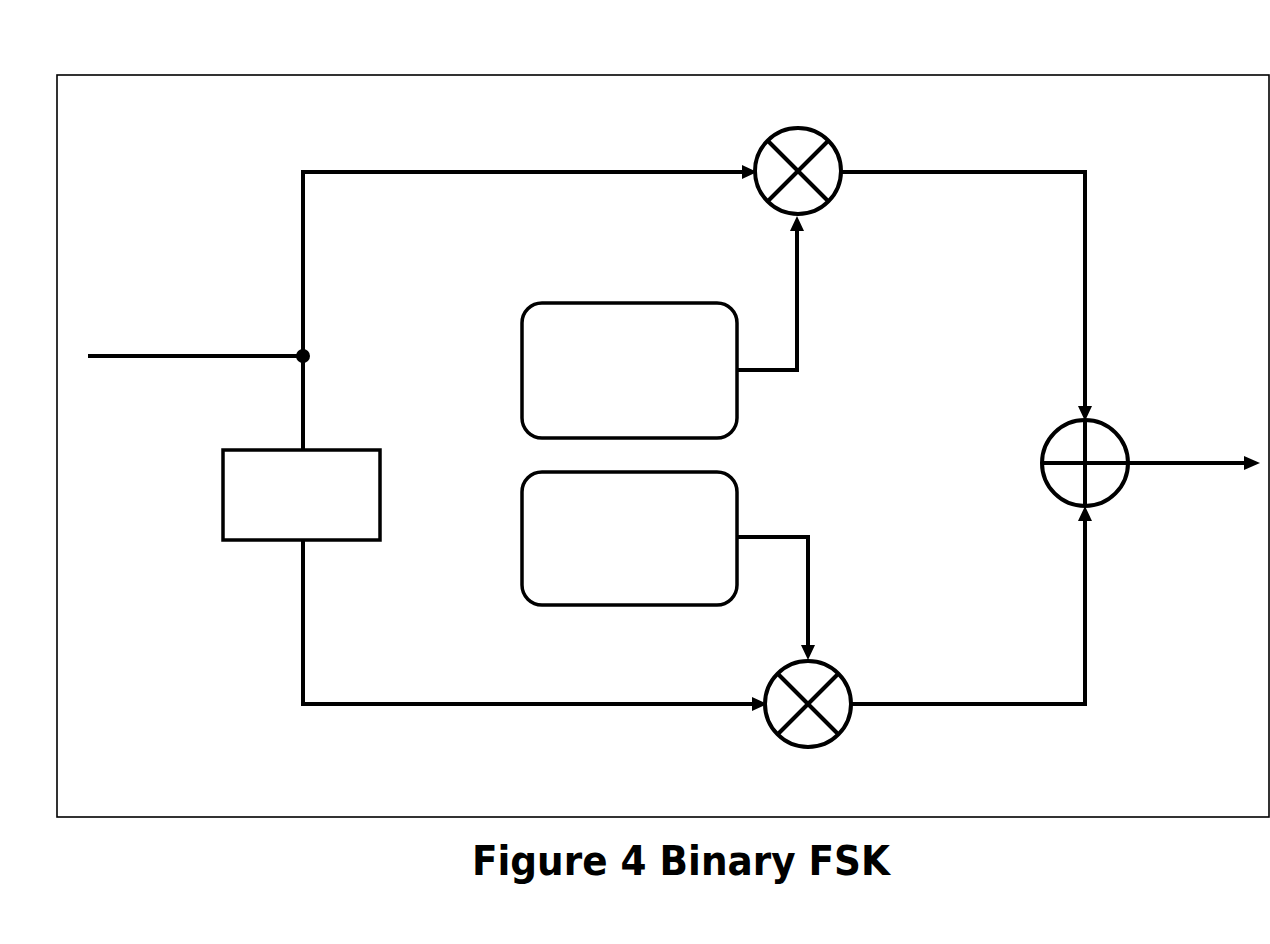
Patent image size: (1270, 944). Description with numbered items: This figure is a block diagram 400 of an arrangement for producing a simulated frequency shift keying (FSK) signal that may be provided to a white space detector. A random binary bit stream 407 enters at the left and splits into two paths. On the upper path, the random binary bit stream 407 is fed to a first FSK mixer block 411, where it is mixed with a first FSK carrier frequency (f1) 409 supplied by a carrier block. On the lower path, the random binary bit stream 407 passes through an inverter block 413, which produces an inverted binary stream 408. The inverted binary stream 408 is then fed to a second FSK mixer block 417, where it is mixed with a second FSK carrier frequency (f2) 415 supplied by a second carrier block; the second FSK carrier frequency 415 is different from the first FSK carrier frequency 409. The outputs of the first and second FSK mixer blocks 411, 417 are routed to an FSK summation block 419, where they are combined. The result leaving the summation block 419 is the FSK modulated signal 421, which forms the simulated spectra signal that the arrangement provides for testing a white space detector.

The binary FSK modulator 400 is at (765, 53).
The random binary bit stream 407 is at (187, 360).
The inverted binary stream 408 is at (463, 698).
The first FSK carrier frequency (f1) 409 is at (628, 302).
The first FSK mixer block 411 is at (827, 138).
The inverter block 413 is at (242, 542).
The second FSK carrier frequency (f2) 415 is at (628, 607).
The second FSK mixer block 417 is at (837, 735).
The FSK summation block 419 is at (1055, 430).
The FSK modulated signal 421 is at (1215, 467).